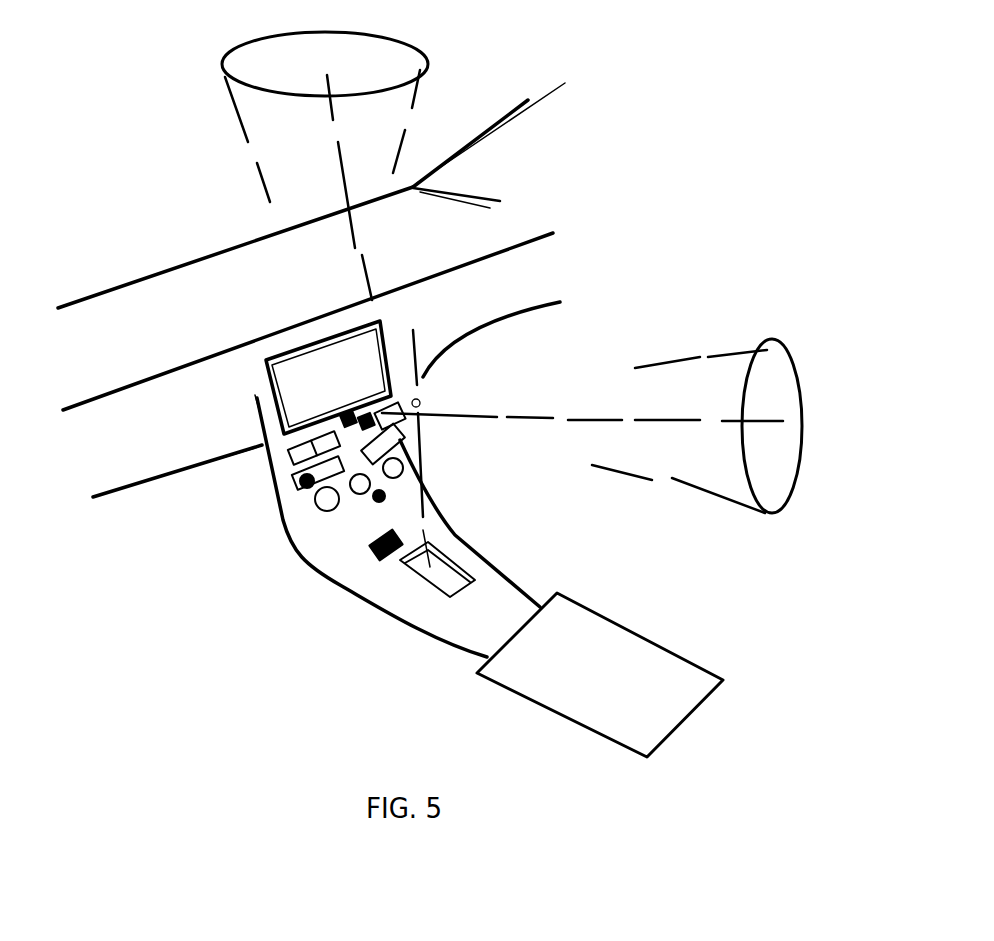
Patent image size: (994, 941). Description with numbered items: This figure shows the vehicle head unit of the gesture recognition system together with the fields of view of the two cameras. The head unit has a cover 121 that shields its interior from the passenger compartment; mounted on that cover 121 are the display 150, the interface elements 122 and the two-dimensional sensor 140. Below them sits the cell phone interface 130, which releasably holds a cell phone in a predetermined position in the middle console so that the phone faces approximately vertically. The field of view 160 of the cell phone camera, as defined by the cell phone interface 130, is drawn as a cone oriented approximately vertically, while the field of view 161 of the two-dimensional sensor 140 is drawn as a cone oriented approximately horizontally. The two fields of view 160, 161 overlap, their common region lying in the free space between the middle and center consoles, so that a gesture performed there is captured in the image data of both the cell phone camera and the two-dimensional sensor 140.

The field of view of the cell phone camera 160 is at (222, 72).
The field of view of the 2d sensor 161 is at (772, 340).
The display 150 is at (320, 377).
The 2d sensor 140 is at (418, 405).
The cover 121 is at (379, 496).
The interface elements 122 is at (380, 555).
The cell phone interface 130 is at (400, 575).